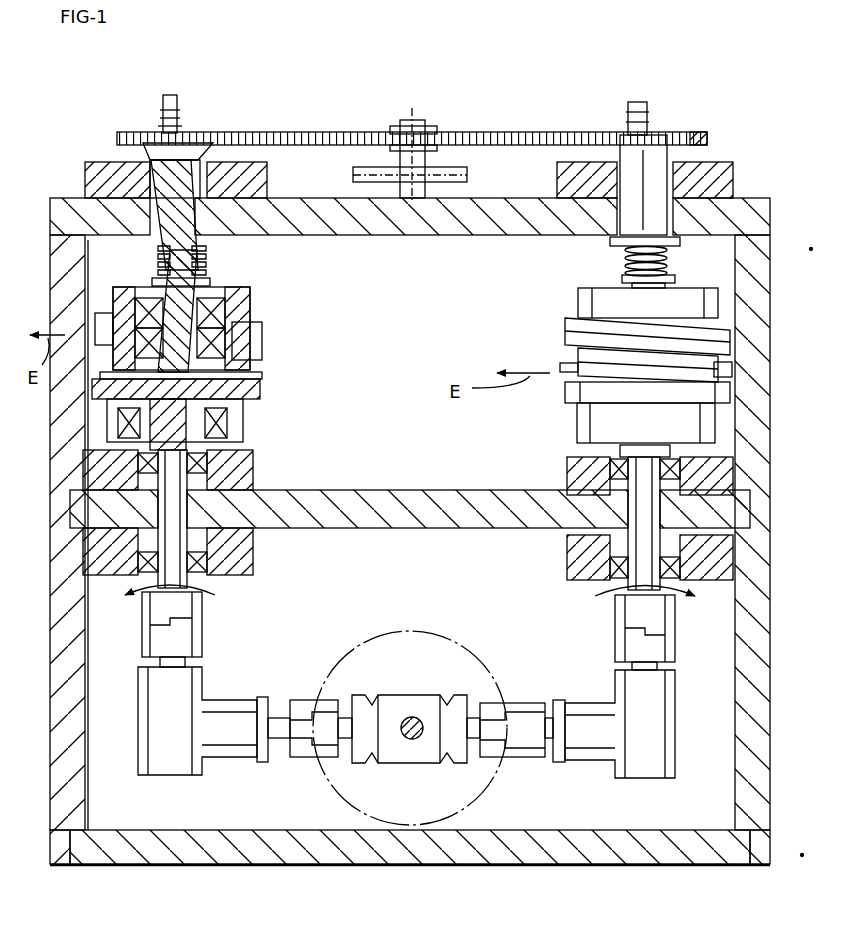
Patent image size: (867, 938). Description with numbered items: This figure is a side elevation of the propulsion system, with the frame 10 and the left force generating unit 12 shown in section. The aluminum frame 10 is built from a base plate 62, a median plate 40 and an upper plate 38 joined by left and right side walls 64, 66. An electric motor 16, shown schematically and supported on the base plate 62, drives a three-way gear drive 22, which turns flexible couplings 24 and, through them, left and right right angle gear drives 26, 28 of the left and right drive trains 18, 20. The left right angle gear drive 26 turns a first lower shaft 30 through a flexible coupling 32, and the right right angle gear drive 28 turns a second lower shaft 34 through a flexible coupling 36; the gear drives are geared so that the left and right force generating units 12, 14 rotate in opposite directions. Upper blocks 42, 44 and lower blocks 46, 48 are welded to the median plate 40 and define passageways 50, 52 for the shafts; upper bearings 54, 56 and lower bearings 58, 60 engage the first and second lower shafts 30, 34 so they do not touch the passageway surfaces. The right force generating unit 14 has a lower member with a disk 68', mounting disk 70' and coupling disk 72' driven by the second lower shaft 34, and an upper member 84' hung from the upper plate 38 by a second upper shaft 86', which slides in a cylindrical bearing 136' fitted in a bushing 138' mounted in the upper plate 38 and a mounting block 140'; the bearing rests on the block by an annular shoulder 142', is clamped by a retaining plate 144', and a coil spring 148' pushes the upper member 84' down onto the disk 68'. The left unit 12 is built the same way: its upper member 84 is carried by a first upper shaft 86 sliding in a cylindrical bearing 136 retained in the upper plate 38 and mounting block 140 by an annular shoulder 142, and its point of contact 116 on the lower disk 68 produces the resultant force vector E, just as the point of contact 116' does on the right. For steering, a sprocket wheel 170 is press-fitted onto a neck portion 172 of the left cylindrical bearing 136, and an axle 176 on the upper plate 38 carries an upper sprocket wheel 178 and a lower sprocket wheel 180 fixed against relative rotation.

The frame 10 is at (50, 278).
The left force generating unit 12 is at (262, 352).
The right force generating unit 14 is at (552, 340).
The electric motor 16 is at (440, 635).
The left drive train 18 is at (205, 645).
The right drive train 20 is at (605, 616).
The three-way gear drive 22 is at (400, 695).
The flexible couplings 24 is at (290, 700).
The left right angle gear drive 26 is at (160, 775).
The right right angle gear drive 28 is at (625, 778).
The first lower shaft 30 is at (253, 465).
The flexible coupling 32 is at (200, 614).
The second lower shaft 34 is at (665, 505).
The flexible coupling 36 is at (620, 652).
The upper plate 38 is at (392, 235).
The median plate 40 is at (420, 490).
The upper block 42 is at (245, 480).
The upper block 44 is at (570, 480).
The lower block 46 is at (248, 560).
The lower block 48 is at (570, 560).
The passageway 50 is at (182, 516).
The passageway 52 is at (628, 518).
The upper bearings 54 is at (225, 445).
The upper bearings 56 is at (618, 455).
The lower bearings 58 is at (195, 578).
The lower bearings 60 is at (620, 582).
The base plate 62 is at (115, 864).
The left side wall 64 is at (60, 430).
The right side wall 66 is at (740, 620).
The lower disk 68 is at (204, 392).
The disk 68' is at (623, 396).
The mounting disk 70' is at (598, 423).
The coupling disk 72' is at (741, 426).
The upper member 84 is at (200, 311).
The upper member 84' is at (615, 335).
The first upper shaft 86 is at (201, 262).
The second upper shaft 86' is at (616, 262).
The point of contact 116 is at (213, 368).
The point of contact 116' is at (664, 362).
The cylindrical bearing 136 is at (114, 179).
The cylindrical bearing 136' is at (690, 168).
The bushing 138' is at (726, 180).
The mounting block 140 is at (262, 178).
The mounting block 140' is at (525, 182).
The annular shoulder 142 is at (106, 162).
The annular shoulder 142' is at (563, 170).
The retaining plate 144' is at (667, 250).
The coil spring 148' is at (668, 281).
The sprocket wheel 170 is at (150, 132).
The neck portion 172 is at (215, 133).
The axle 176 is at (413, 118).
The upper sprocket wheel 178 is at (440, 132).
The lower sprocket wheel 180 is at (466, 175).